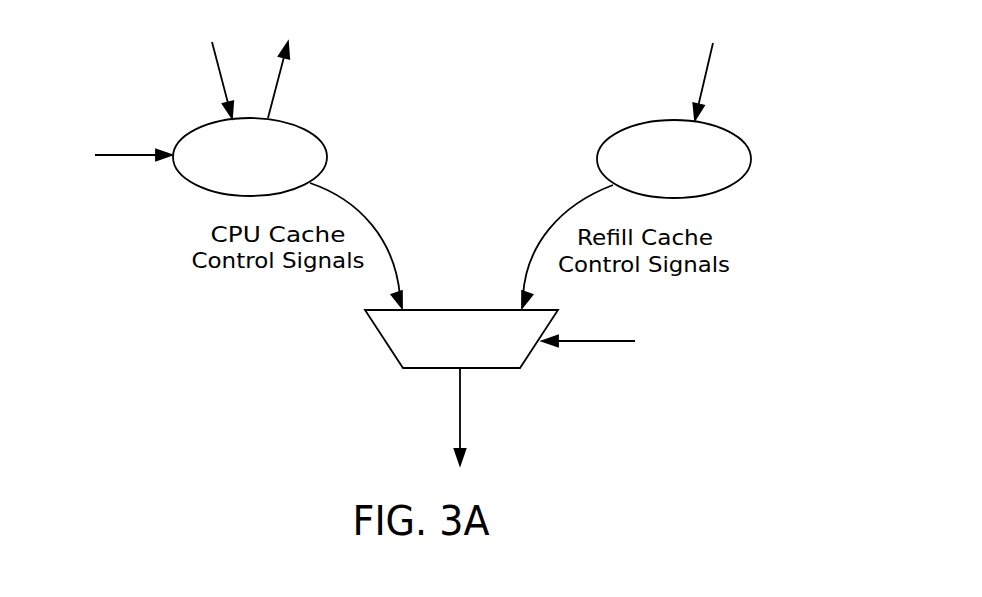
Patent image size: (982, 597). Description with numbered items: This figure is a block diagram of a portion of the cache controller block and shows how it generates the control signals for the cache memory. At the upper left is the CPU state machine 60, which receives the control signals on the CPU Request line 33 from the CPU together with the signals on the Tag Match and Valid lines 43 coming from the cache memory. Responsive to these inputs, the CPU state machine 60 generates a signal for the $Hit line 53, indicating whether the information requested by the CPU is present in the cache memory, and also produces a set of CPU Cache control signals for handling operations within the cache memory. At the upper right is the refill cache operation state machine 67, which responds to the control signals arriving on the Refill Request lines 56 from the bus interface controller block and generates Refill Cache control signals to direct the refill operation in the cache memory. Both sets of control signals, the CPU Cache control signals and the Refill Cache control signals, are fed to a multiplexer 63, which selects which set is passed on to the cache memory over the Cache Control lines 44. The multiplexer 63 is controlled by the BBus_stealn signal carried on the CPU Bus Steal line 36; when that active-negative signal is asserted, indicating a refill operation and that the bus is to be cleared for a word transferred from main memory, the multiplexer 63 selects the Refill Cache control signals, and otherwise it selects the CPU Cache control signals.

The CPU state machine 60 is at (235, 168).
The refill cache control logic 67 is at (659, 169).
The multiplexer 63 is at (477, 353).
The CPU Request line 33 is at (218, 80).
The $Hit line 53 is at (280, 80).
The Tag Match and Valid lines 43 is at (133, 155).
The Refill Request lines 56 is at (703, 83).
The Cache Control lines 44 is at (462, 417).
The CPU Bus Steal line 36 is at (597, 342).